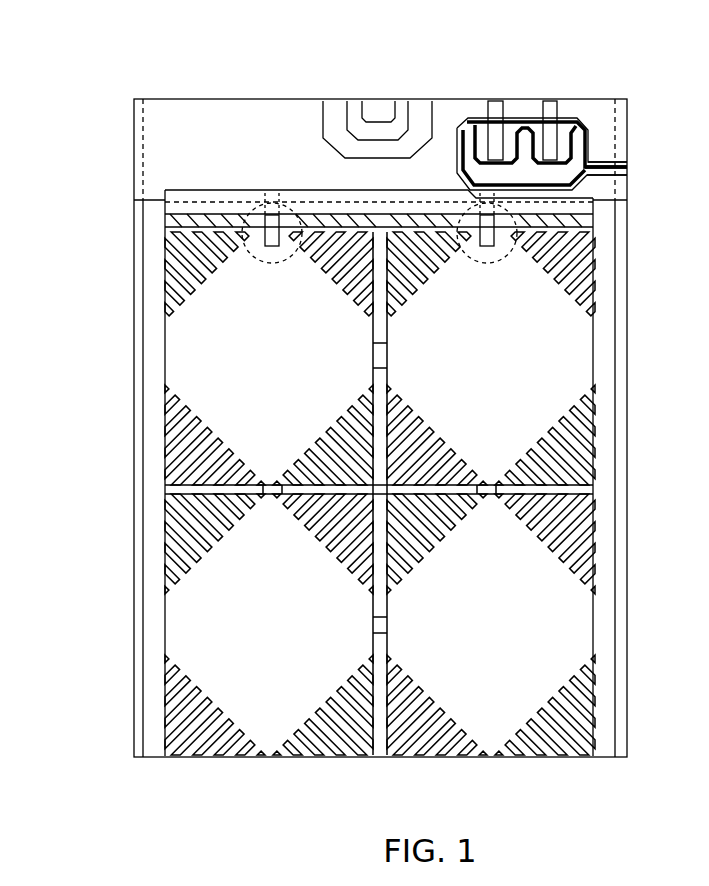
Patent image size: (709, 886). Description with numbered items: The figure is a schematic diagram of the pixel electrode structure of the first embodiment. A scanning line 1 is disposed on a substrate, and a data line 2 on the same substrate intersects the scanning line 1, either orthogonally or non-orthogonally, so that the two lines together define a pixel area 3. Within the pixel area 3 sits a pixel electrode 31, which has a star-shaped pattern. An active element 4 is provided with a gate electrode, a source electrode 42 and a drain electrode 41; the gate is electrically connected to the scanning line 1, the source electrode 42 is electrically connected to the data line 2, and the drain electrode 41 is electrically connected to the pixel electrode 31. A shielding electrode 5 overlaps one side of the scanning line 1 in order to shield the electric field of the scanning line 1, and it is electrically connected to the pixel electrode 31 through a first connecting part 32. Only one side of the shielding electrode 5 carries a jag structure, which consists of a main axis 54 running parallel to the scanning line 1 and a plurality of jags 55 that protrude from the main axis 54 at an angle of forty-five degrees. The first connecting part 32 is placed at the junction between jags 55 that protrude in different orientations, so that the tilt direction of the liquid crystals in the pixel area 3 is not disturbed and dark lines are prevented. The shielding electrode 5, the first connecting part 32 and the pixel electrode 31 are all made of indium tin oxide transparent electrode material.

The scanning line 1 is at (240, 118).
The data line 2 is at (134, 286).
The pixel area 3 is at (165, 627).
The pixel electrode 31 is at (183, 365).
The first connecting part 32 is at (288, 196).
The active element 4 is at (577, 113).
The drain electrode 41 is at (496, 100).
The source electrode 42 is at (627, 171).
The shielding electrode 5 is at (384, 203).
The main axis 54 is at (165, 197).
The jags 55 is at (165, 222).